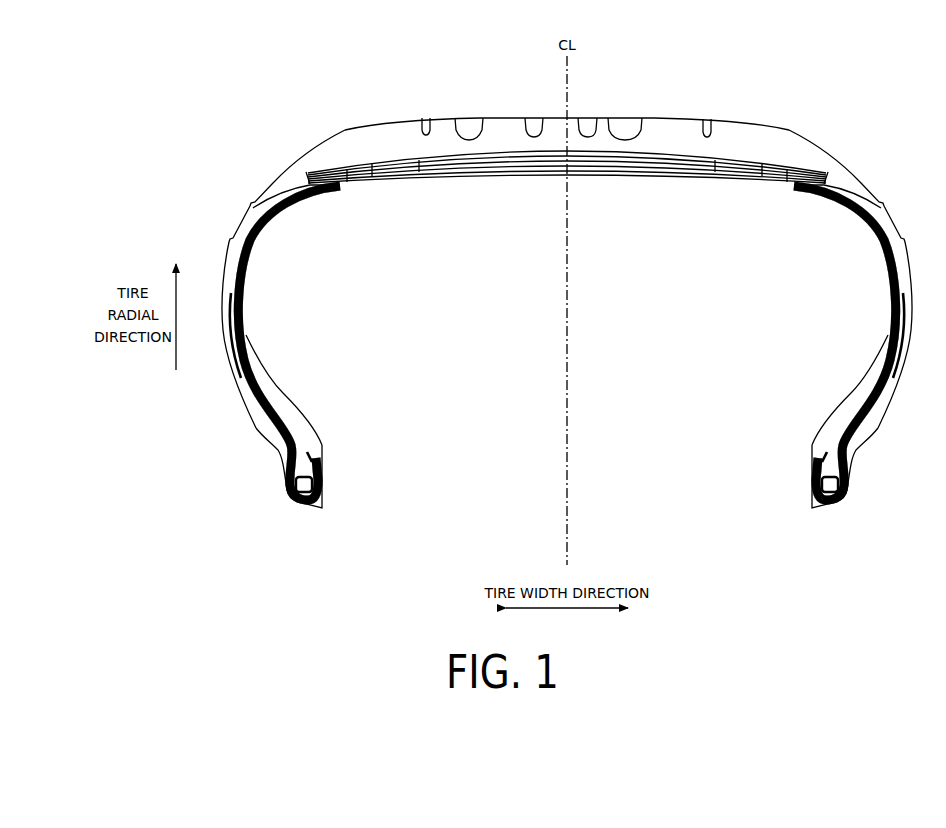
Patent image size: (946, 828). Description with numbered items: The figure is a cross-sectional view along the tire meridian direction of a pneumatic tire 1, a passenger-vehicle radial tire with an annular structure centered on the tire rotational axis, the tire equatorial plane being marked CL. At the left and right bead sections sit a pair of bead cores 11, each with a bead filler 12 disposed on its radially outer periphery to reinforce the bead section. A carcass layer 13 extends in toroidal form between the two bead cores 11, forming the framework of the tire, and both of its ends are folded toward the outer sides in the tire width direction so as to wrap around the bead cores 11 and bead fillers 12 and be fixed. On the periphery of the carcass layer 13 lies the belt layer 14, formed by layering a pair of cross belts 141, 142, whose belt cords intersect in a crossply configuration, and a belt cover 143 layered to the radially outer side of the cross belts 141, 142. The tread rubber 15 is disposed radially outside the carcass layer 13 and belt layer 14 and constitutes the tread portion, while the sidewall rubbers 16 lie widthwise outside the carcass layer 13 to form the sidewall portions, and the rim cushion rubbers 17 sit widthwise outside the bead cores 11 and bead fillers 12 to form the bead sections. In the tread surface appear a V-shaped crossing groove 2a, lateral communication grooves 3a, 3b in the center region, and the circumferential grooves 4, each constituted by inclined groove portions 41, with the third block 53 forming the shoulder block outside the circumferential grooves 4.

The pneumatic tire 1 is at (774, 94).
The third block 53 is at (353, 125).
The V-shaped crossing groove 2a is at (469, 121).
The lateral communication groove 3a is at (590, 121).
The lateral communication groove 3b is at (534, 121).
The circumferential groove 4 is at (426, 121).
The inclined groove portion 41 is at (708, 122).
The belt layer 14 is at (567, 209).
The cross belt 141 is at (697, 232).
The cross belt 142 is at (760, 171).
The belt cover 143 is at (716, 168).
The carcass layer 13 is at (834, 204).
The tread rubber 15 is at (842, 178).
The sidewall rubber 16 is at (233, 258).
The rim cushion rubber 17 is at (272, 441).
The bead filler 12 is at (292, 440).
The bead core 11 is at (305, 493).